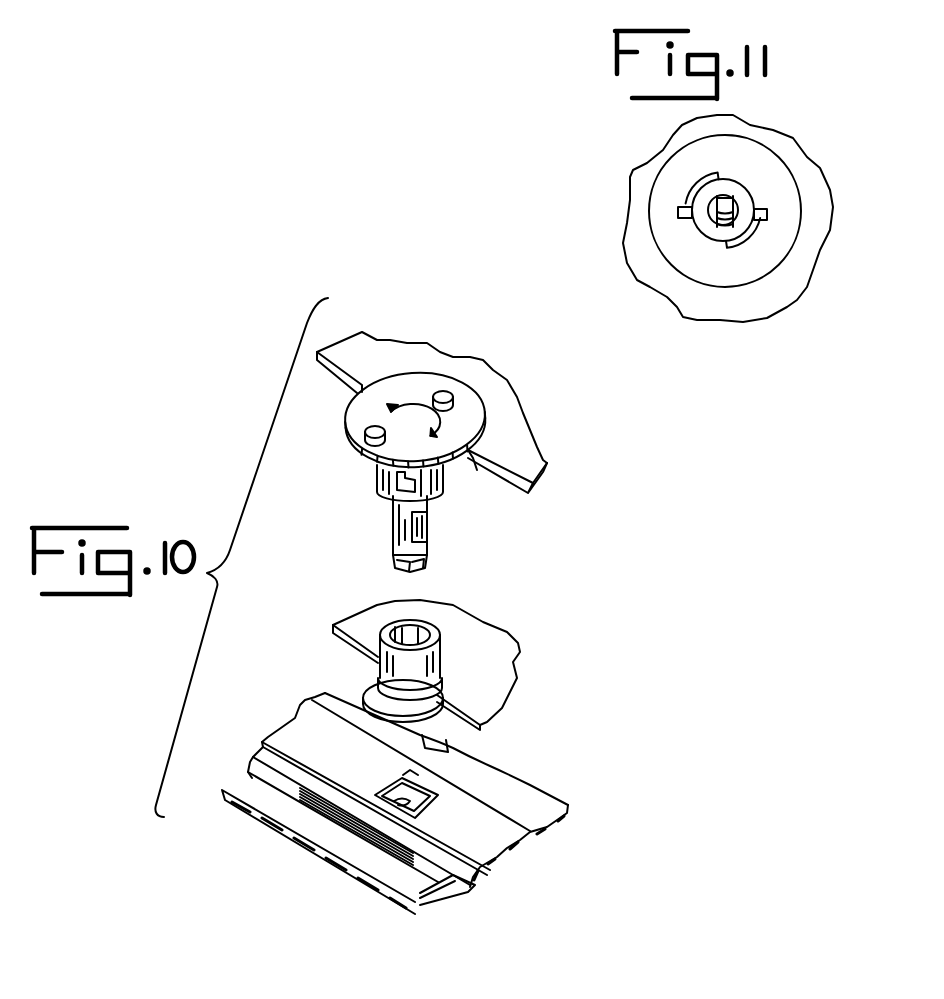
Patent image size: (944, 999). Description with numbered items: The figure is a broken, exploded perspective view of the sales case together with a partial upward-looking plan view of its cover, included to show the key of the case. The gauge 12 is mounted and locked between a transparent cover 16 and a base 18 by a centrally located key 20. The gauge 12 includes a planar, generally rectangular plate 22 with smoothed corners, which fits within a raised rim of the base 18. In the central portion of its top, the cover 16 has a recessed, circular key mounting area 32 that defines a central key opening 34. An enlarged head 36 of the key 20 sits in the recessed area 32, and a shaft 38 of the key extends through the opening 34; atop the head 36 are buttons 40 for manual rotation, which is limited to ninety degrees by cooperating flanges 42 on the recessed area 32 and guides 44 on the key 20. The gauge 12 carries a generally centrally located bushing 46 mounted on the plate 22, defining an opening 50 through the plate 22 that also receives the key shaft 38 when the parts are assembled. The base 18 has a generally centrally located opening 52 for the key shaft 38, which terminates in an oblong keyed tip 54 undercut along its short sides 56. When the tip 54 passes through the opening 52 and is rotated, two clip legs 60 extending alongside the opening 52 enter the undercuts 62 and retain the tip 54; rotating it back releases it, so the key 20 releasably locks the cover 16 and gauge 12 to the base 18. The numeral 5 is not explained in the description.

In FIG. 11, the fastener assembly 5 is at (722, 215).
In FIG. 10, the gauge 12 is at (502, 687).
In FIG. 10, the transparent cover 16 is at (547, 478).
In FIG. 11, the transparent cover 16 is at (775, 303).
In FIG. 10, the base 18 is at (557, 792).
In FIG. 10, the key 20 is at (428, 537).
In FIG. 11, the key 20 is at (735, 197).
In FIG. 10, the plate 22 is at (465, 672).
In FIG. 10, the key mounting area 32 is at (475, 468).
In FIG. 11, the key mounting area 32 is at (782, 192).
In FIG. 11, the key opening 34 is at (697, 230).
In FIG. 10, the head 36 is at (353, 423).
In FIG. 10, the shaft 38 is at (380, 485).
In FIG. 10, the buttons 40 is at (375, 428).
In FIG. 11, the flanges 42 is at (702, 180).
In FIG. 11, the guides 44 is at (682, 210).
In FIG. 10, the bushing 46 is at (442, 632).
In FIG. 10, the opening 50 is at (392, 623).
In FIG. 10, the opening 52 is at (428, 805).
In FIG. 10, the keyed tip 54 is at (397, 562).
In FIG. 10, the short sides 56 is at (428, 563).
In FIG. 11, the short sides 56 is at (724, 197).
In FIG. 10, the legs 60 is at (416, 786).
In FIG. 10, the undercuts 62 is at (400, 568).